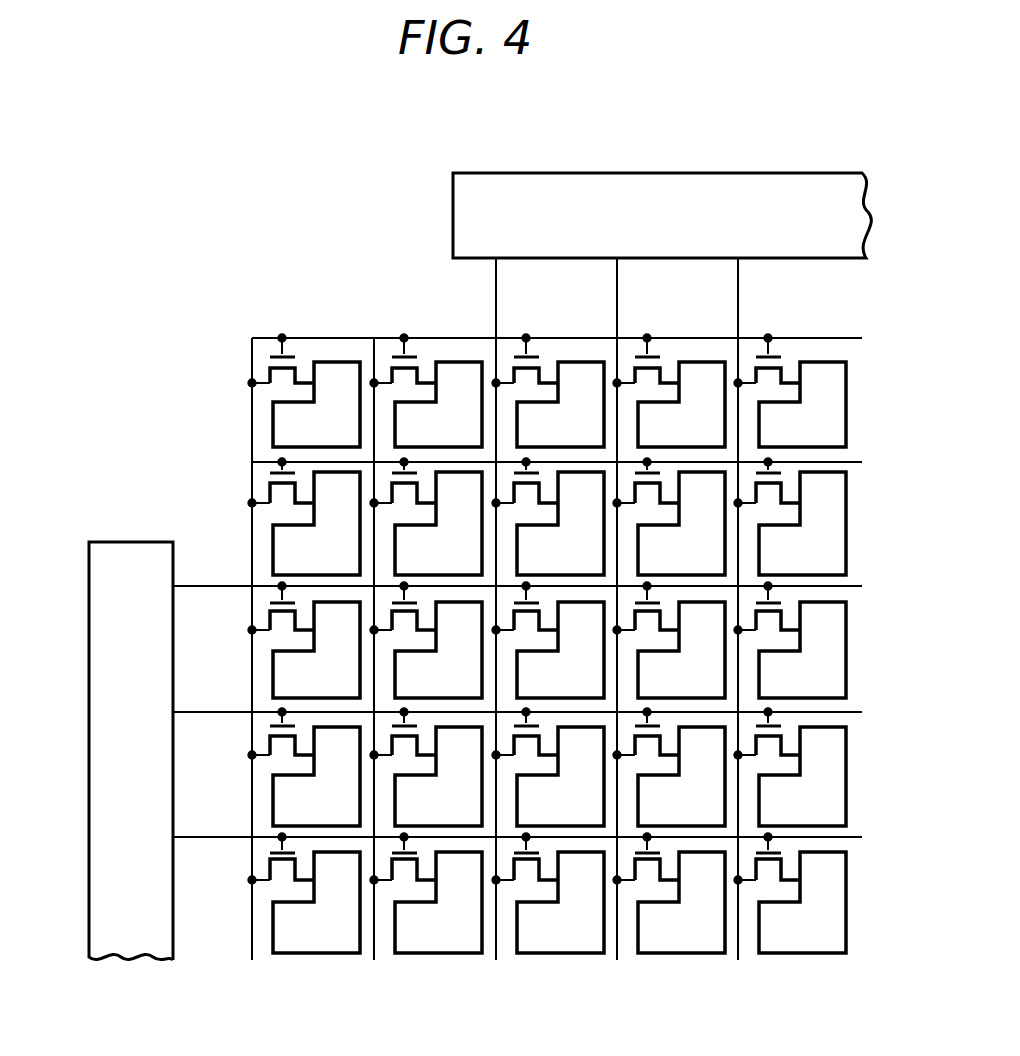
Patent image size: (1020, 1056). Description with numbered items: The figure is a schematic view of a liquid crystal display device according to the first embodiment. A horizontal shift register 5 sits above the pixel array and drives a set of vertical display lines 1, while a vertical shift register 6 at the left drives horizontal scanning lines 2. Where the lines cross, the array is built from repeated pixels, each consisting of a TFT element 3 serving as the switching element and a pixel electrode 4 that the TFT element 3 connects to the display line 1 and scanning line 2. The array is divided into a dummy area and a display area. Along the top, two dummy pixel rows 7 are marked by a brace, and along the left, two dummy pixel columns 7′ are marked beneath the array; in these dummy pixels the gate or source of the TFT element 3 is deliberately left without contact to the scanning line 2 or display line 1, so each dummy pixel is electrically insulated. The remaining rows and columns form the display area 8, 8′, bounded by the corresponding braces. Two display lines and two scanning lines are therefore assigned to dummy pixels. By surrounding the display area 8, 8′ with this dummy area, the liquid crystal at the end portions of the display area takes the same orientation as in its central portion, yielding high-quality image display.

The display line 1 is at (738, 307).
The scanning line 2 is at (213, 586).
The TFT element 3 is at (298, 362).
The pixel electrode 4 is at (338, 372).
The horizontal shift register 5 is at (719, 173).
The vertical shift register 6 is at (89, 822).
The dummy pixel rows 7 is at (873, 335).
The display area 8 is at (545, 739).
The dummy pixel columns 7′ is at (495, 980).
The display area 8′ is at (678, 649).